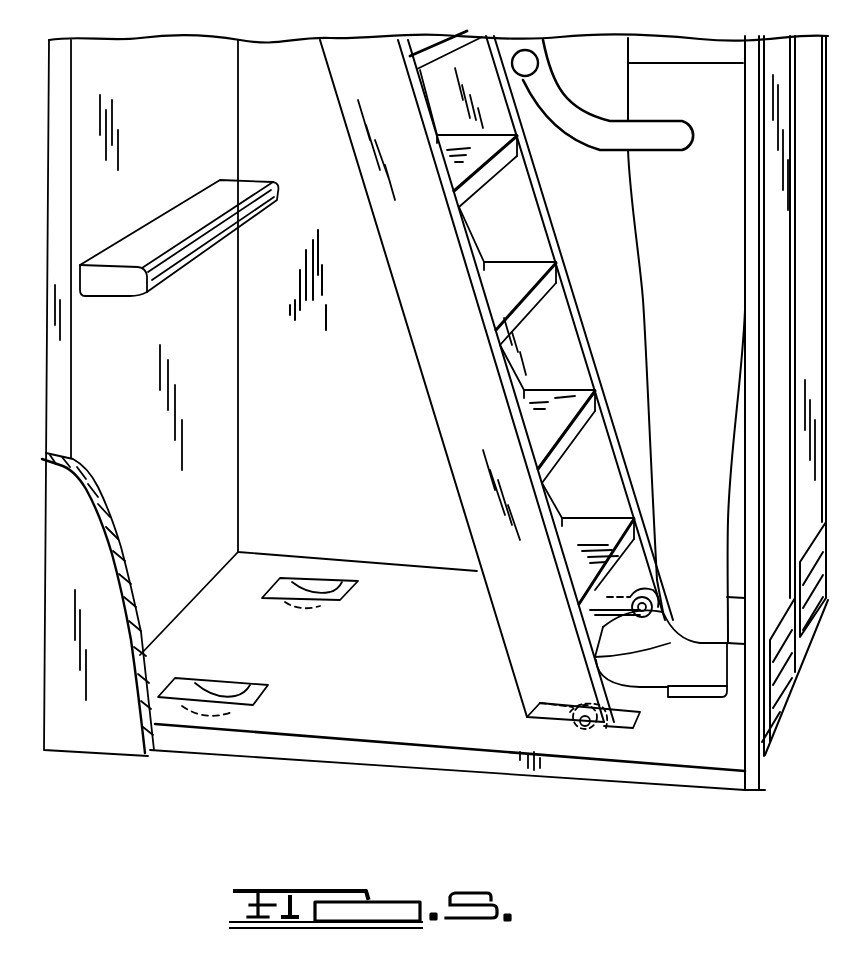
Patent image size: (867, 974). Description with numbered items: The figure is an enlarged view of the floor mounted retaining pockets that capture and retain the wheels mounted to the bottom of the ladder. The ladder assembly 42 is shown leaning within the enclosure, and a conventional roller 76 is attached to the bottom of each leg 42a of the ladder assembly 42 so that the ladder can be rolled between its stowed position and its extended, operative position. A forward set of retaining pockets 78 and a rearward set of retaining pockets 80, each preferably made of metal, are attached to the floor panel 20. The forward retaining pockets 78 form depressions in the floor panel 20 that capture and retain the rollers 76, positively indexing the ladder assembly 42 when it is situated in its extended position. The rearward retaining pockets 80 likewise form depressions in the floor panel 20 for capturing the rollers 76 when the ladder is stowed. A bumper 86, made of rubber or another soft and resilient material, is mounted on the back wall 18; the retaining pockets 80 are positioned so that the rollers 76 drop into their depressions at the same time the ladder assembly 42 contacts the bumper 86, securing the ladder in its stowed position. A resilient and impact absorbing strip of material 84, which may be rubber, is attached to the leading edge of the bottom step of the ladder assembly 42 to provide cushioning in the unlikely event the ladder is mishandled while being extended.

The back wall 18 is at (140, 414).
The floor panel 20 is at (362, 691).
The ladder assembly 42 is at (500, 376).
The leg 42a is at (513, 635).
The roller 76 is at (656, 610).
The forward retaining pocket 78 is at (548, 725).
The rearward retaining pocket 80 is at (183, 690).
The resilient and impact absorbing strip of material 84 is at (600, 560).
The bumper 86 is at (165, 220).